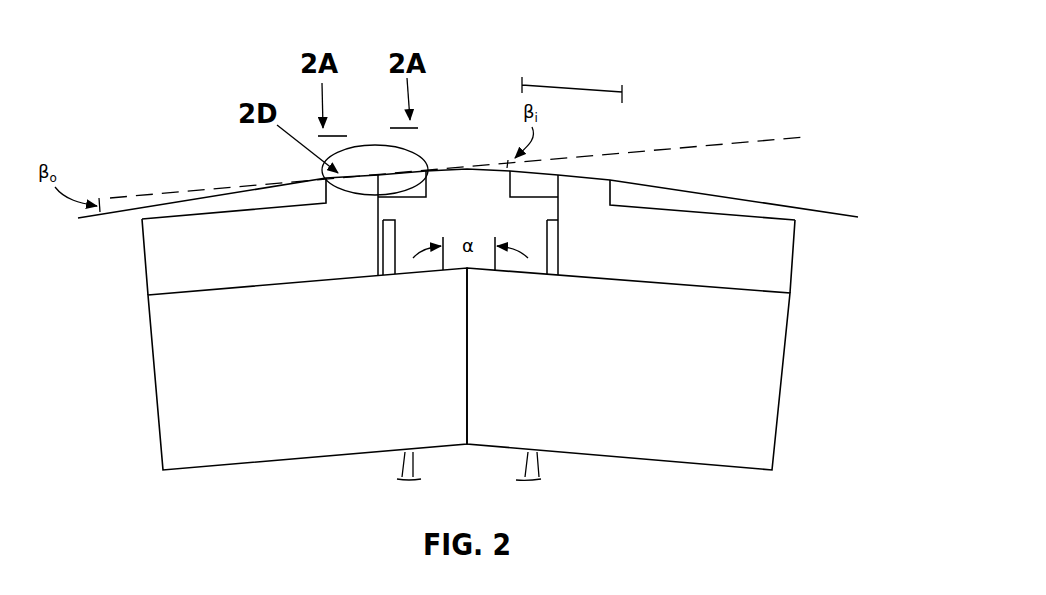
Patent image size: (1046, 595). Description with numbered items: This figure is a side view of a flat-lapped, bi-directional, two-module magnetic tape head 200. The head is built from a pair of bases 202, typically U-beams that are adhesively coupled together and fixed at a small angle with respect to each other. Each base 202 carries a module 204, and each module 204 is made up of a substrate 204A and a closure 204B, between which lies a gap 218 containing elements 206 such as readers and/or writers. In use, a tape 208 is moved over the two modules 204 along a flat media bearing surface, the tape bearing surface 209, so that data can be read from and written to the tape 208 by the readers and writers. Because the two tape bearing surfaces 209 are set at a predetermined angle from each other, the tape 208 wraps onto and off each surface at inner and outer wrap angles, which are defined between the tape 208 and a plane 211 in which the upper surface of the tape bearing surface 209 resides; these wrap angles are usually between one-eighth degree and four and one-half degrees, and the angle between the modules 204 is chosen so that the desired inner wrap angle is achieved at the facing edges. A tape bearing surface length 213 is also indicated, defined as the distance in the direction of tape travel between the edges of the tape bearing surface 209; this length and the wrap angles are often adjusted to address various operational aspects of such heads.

The magnetic tape head 200 is at (198, 140).
The base 202 is at (152, 360).
The module 204 is at (145, 263).
The substrate 204A is at (203, 240).
The closure 204B is at (530, 198).
The elements 206 is at (382, 165).
The tape 208 is at (710, 192).
The tape bearing surface 209 is at (333, 170).
The plane 211 is at (638, 148).
The tape bearing surface length 213 is at (582, 85).
The gap 218 is at (470, 146).